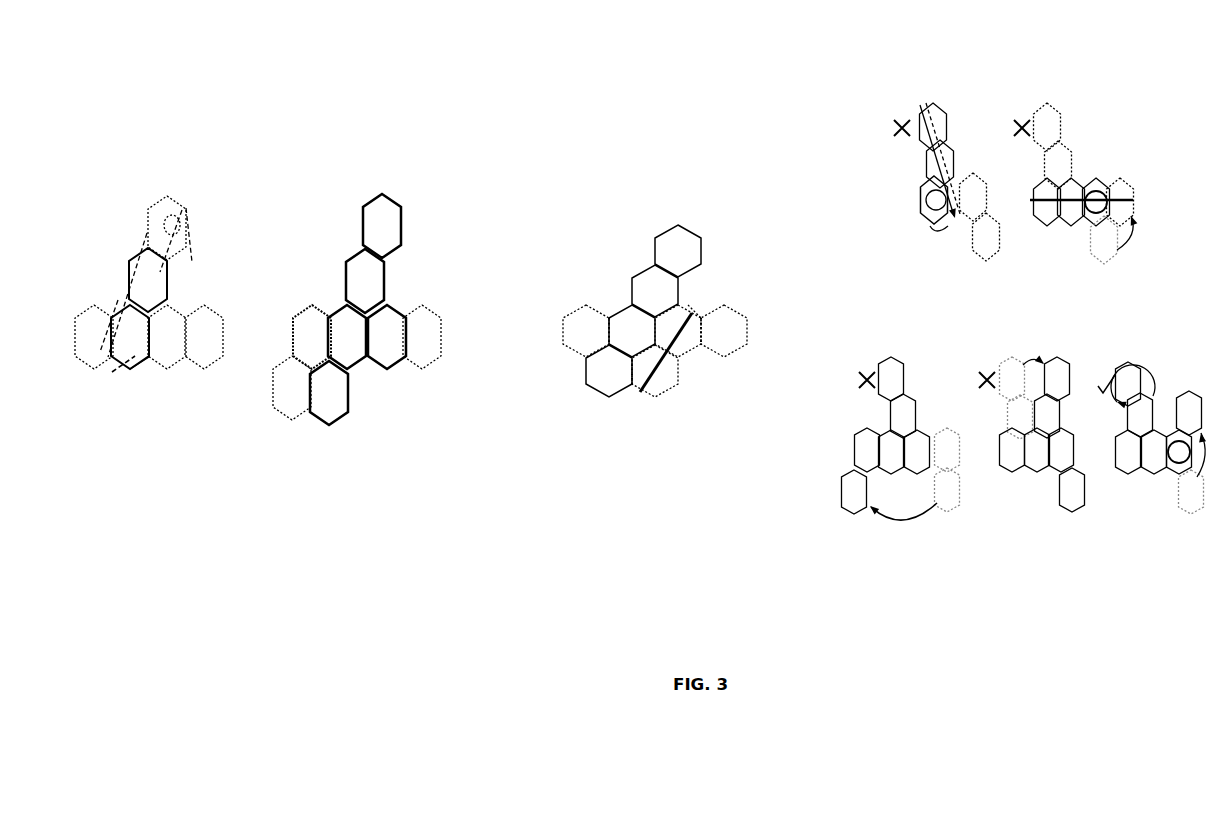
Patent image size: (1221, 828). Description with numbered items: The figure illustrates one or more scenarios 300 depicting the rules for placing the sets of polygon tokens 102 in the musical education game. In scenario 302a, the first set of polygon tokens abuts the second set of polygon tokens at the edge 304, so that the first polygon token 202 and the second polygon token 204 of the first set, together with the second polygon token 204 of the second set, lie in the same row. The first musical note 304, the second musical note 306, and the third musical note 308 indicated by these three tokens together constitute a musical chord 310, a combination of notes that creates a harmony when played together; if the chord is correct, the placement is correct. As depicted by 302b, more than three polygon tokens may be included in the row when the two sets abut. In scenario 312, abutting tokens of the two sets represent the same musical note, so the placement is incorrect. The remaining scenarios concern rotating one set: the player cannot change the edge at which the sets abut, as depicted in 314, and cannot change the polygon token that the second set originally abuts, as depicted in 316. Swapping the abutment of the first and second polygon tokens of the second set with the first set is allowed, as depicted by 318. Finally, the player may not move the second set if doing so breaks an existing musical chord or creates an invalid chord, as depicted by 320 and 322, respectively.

The scenarios 300 is at (180, 120).
The scenario 302a is at (110, 226).
The scenario with more than three polygon tokens 302b is at (350, 219).
The musical chord 310 is at (147, 233).
The edge 304 is at (160, 225).
The first polygon token 202 is at (178, 223).
The second polygon token 204 is at (167, 283).
The second musical note 306 is at (168, 288).
The sets of polygon tokens 102 is at (146, 236).
The third musical note 308 is at (123, 363).
The scenario 312 is at (602, 222).
The scenario of changed abutment edge 314 is at (1022, 482).
The scenario of changed abutting token 316 is at (829, 489).
The scenario of swapped abutment 318 is at (1124, 359).
The scenario of breaking an existing chord 320 is at (889, 114).
The scenario of creating an invalid chord 322 is at (1079, 127).